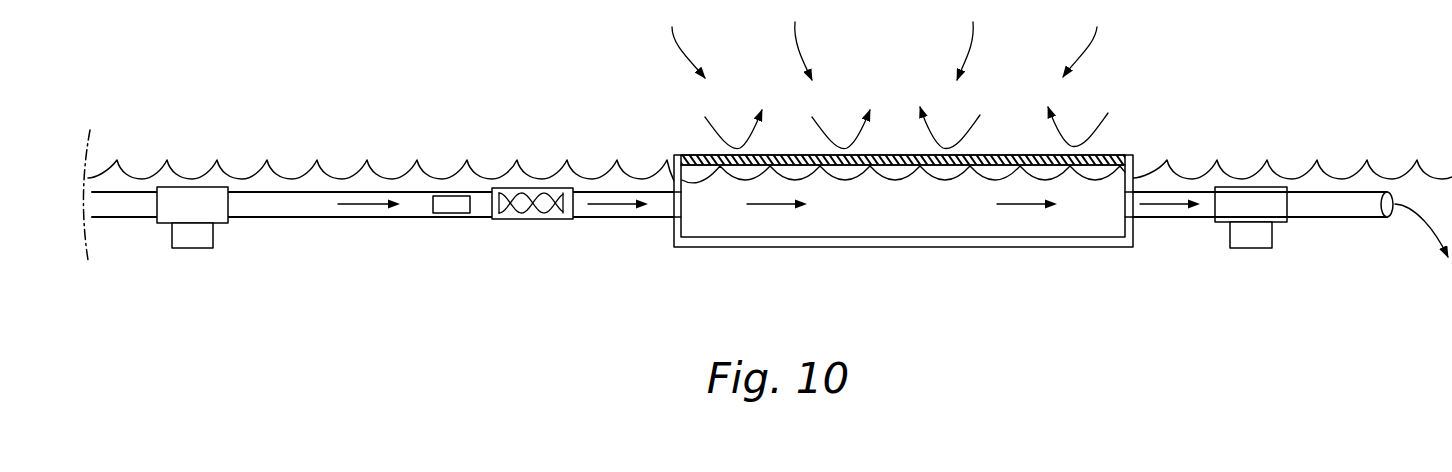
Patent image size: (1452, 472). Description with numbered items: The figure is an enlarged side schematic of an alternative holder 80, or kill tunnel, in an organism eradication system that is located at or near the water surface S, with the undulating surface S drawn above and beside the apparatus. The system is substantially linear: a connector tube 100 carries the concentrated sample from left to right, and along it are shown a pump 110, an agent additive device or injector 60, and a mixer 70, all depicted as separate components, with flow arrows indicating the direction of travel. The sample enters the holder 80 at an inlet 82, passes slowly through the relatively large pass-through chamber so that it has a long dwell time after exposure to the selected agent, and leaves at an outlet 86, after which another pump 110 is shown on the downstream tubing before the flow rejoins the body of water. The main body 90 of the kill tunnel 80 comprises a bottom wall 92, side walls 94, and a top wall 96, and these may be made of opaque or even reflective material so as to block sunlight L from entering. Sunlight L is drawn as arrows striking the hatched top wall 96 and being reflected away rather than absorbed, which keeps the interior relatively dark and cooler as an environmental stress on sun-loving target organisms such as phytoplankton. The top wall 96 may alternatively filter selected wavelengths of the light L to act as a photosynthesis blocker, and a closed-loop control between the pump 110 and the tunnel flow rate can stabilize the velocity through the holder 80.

The surface of the body of water S is at (293, 178).
The sunlight L is at (807, 43).
The injector 60 is at (453, 213).
The mixer 70 is at (542, 215).
The holder 80 is at (1130, 95).
The inlet 82 is at (647, 242).
The outlet 86 is at (1167, 240).
The main body 90 is at (892, 209).
The bottom wall 92 is at (895, 247).
The side walls 94 is at (680, 212).
The top wall 96 is at (693, 157).
The connector tube 100 is at (345, 213).
The pump 110 is at (193, 240).